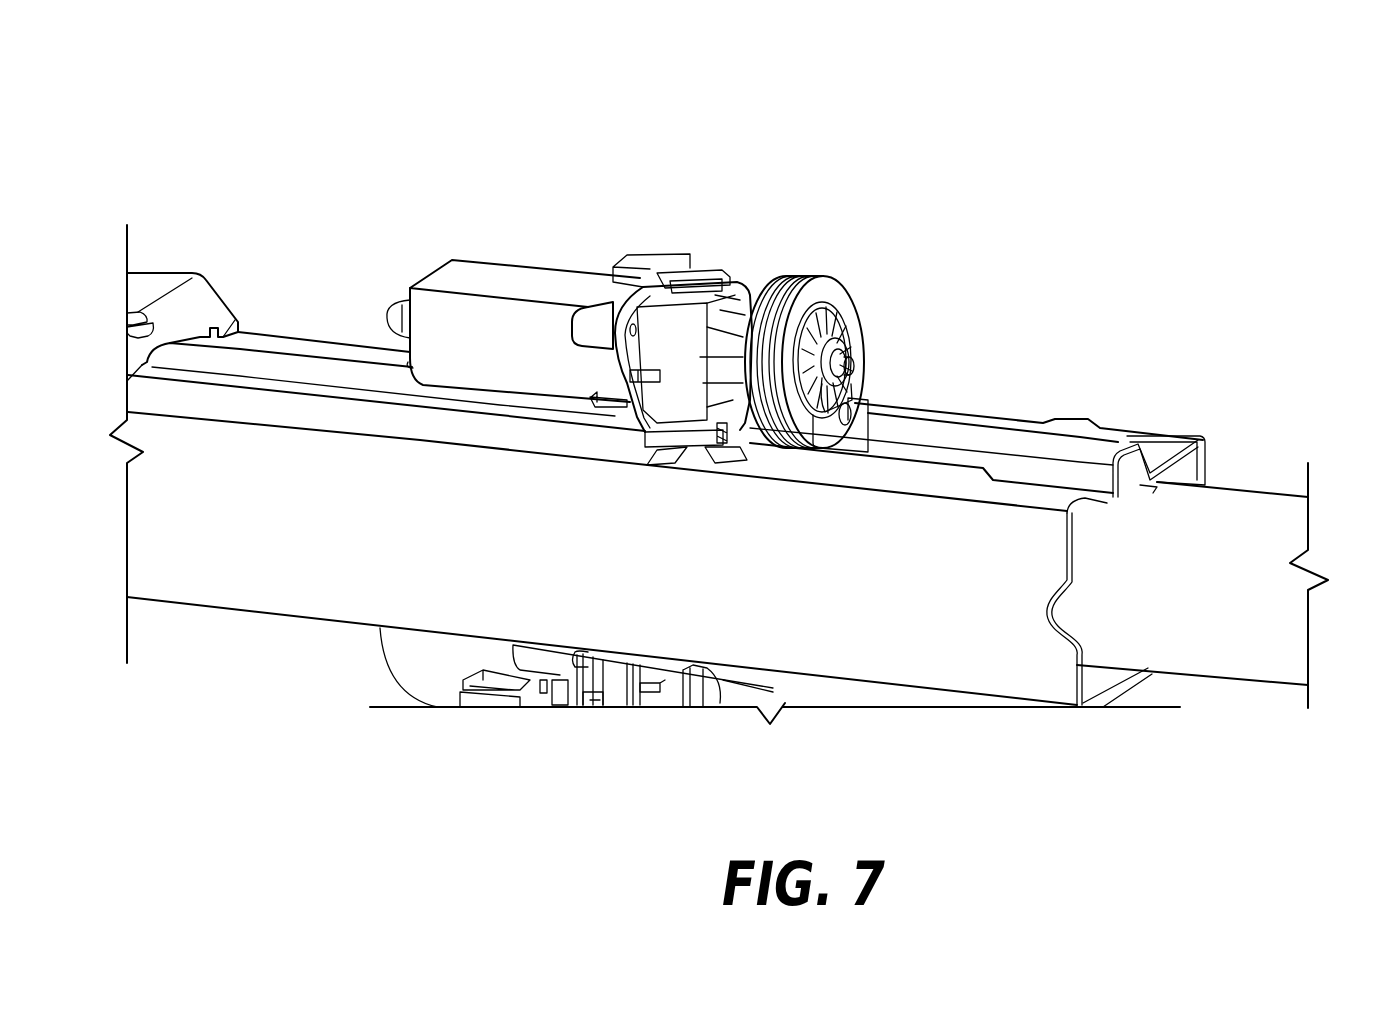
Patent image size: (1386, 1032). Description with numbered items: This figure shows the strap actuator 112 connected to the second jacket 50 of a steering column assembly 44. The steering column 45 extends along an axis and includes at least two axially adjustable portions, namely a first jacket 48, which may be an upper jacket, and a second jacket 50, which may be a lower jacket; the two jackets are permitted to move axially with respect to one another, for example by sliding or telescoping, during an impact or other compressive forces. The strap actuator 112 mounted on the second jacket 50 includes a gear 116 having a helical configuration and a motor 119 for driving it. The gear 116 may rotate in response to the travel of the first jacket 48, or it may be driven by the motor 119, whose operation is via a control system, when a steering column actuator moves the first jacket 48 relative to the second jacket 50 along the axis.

The strap actuator 112 is at (962, 137).
The steering column assembly 44 is at (1292, 190).
The steering column 45 is at (181, 270).
The first jacket 48 is at (1266, 497).
The second jacket 50 is at (1120, 432).
The gear 116 is at (860, 320).
The motor 119 is at (654, 275).